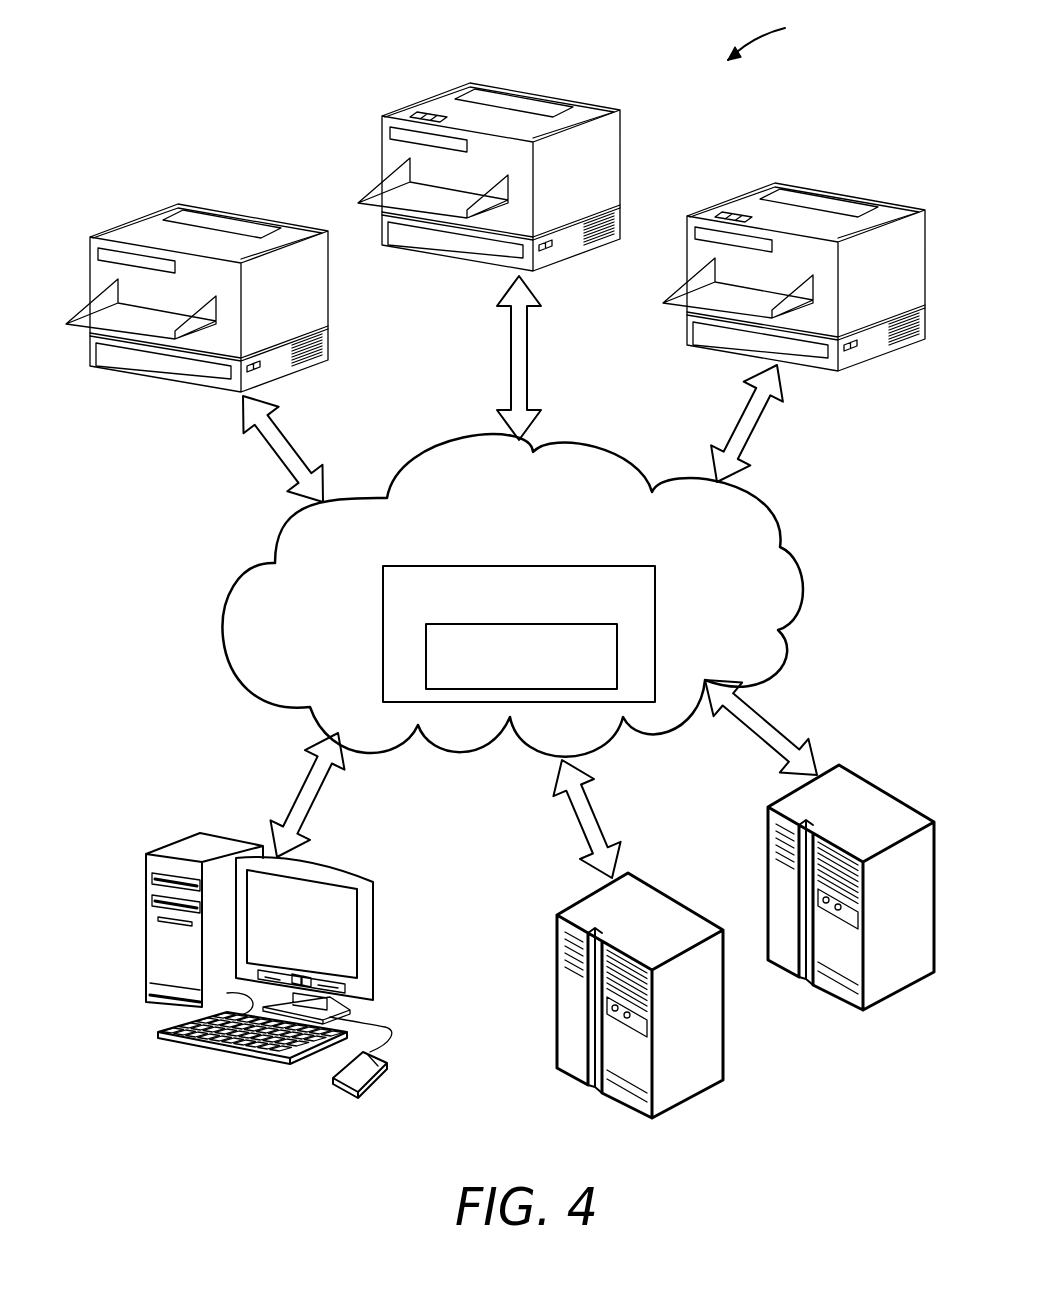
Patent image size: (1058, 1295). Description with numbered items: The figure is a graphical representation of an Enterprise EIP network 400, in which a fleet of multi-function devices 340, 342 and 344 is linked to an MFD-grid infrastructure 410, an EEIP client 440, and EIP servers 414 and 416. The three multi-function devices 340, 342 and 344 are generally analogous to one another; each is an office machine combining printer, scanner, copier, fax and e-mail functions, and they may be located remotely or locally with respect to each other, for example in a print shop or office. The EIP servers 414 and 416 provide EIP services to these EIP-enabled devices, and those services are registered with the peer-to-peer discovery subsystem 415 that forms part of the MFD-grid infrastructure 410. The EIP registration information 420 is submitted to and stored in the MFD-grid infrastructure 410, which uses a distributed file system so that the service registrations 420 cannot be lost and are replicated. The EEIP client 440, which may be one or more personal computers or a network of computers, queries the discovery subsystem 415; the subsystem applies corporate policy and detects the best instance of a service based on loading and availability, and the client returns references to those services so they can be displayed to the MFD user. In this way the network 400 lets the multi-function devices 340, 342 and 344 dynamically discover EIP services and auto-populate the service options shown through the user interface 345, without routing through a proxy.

The Enterprise EIP network 400 is at (827, 36).
The multi-function device 340 is at (507, 92).
The multi-function device 342 is at (235, 220).
The multi-function device 344 is at (827, 192).
The user interface 345 is at (374, 95).
The MFD-grid infrastructure 410 is at (777, 525).
The discovery subsystem 415 is at (659, 588).
The EIP registration information 420 is at (617, 665).
The EEIP client 440 is at (335, 867).
The EIP server 414 is at (668, 893).
The EIP server 416 is at (883, 790).